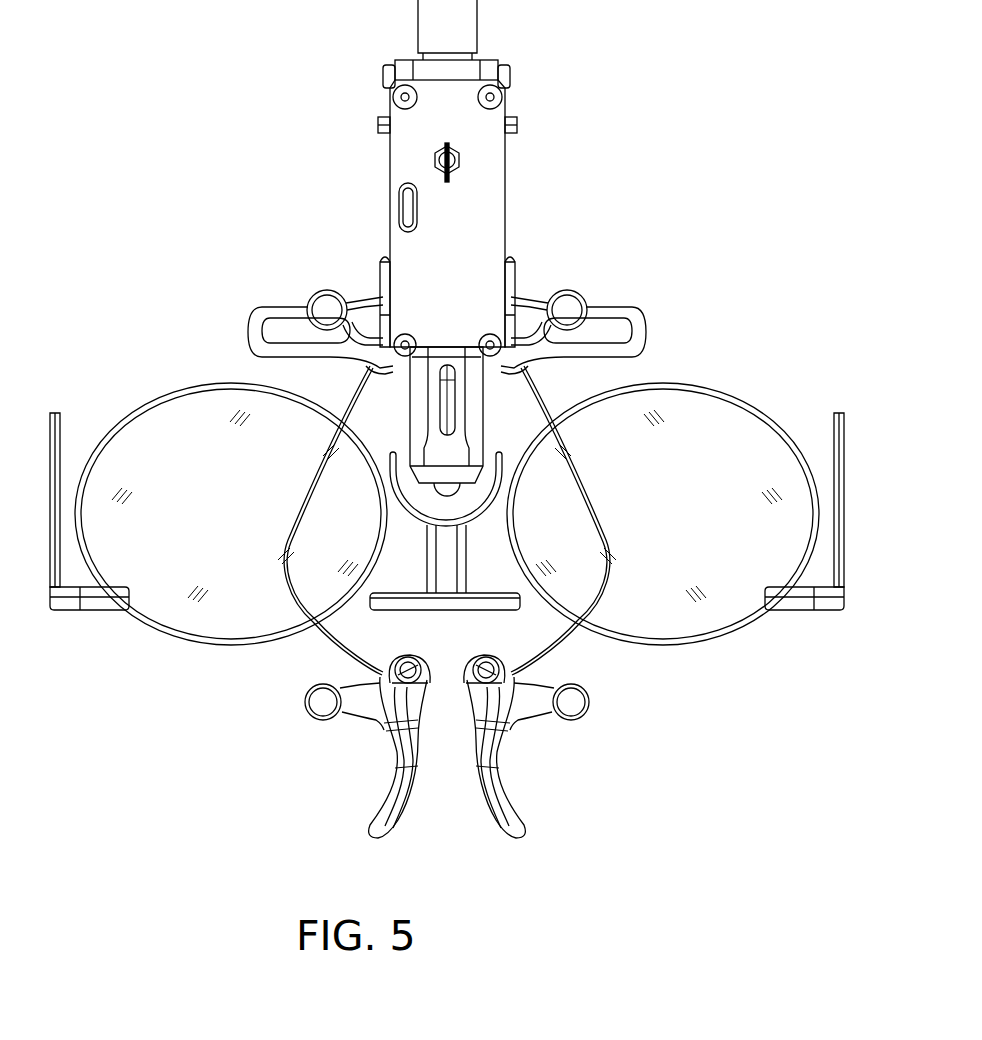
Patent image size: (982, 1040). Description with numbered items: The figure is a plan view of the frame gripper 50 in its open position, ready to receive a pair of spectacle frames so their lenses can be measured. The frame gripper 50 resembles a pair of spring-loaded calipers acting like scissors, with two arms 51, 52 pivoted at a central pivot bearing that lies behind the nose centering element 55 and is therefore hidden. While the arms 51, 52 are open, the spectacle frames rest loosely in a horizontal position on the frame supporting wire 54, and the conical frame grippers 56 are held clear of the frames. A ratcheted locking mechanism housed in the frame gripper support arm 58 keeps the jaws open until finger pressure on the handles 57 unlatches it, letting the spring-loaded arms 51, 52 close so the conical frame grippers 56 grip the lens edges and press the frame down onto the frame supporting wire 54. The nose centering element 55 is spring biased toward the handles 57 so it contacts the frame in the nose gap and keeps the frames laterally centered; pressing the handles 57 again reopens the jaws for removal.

The frame gripper 50 is at (600, 827).
The arm 51 is at (470, 630).
The arm 52 is at (408, 632).
The frame supporting wire 54 is at (523, 374).
The nose centering element 55 is at (405, 492).
The conical frame grippers 56 is at (583, 296).
The handles 57 is at (388, 785).
The frame gripper support arm 58 is at (505, 200).